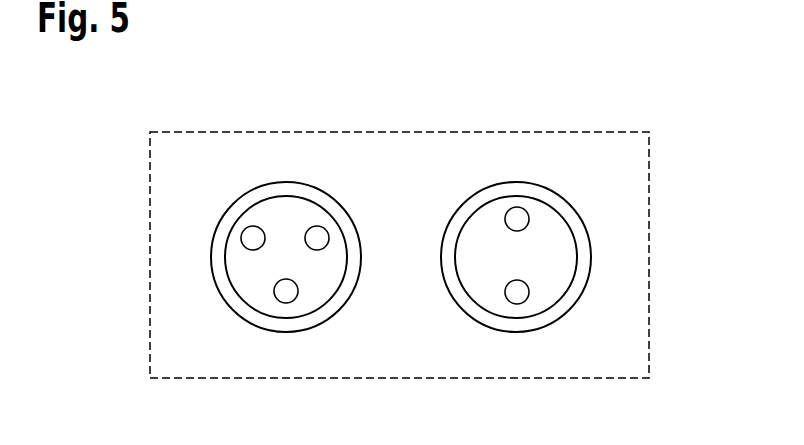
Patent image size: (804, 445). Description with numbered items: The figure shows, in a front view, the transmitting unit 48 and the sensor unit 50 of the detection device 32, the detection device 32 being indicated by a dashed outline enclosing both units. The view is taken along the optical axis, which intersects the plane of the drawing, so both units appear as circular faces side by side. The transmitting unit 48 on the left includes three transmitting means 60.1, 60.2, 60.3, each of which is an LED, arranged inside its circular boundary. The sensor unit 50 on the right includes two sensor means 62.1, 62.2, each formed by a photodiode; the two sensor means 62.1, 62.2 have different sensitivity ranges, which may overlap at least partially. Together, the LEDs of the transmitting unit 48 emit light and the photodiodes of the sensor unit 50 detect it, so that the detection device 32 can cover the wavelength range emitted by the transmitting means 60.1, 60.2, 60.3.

The detection device 32 is at (607, 165).
The transmitting unit 48 is at (287, 170).
The sensor unit 50 is at (517, 170).
The transmitting means 60.1 is at (253, 238).
The transmitting means 60.2 is at (286, 291).
The transmitting means 60.3 is at (317, 238).
The sensor means 62.1 is at (517, 219).
The sensor means 62.2 is at (517, 292).